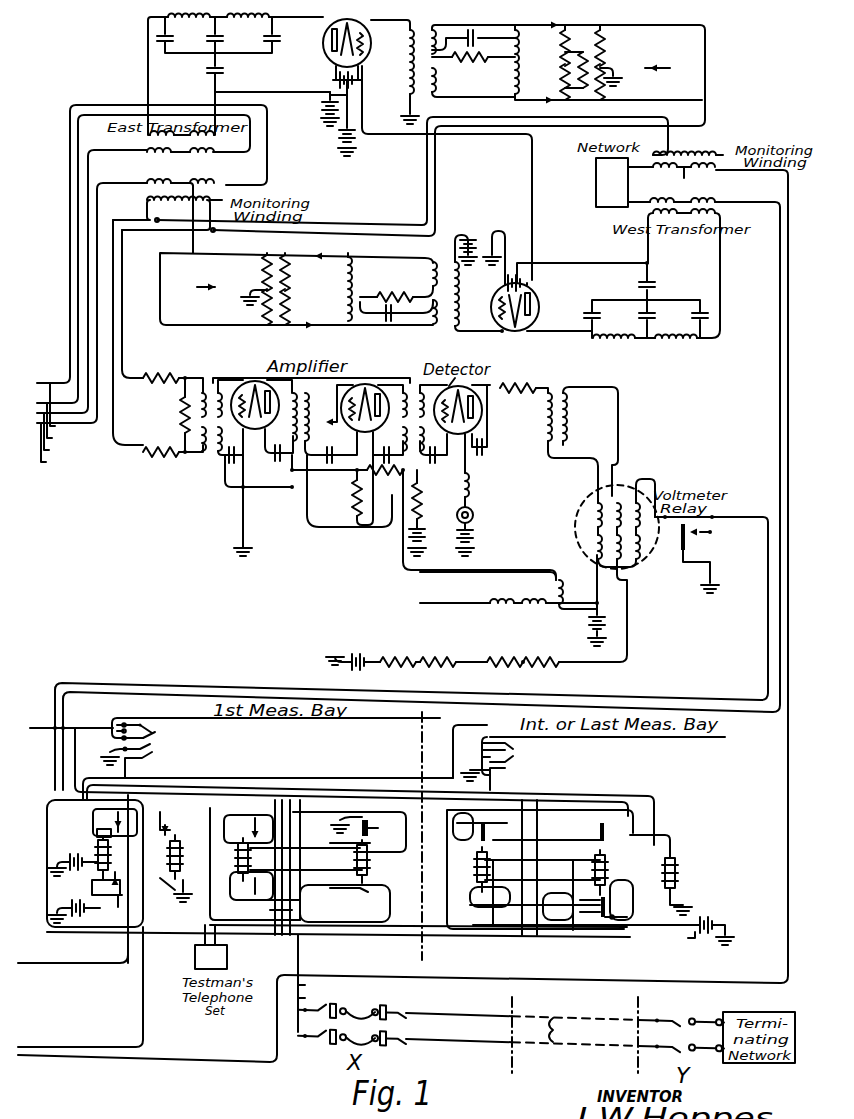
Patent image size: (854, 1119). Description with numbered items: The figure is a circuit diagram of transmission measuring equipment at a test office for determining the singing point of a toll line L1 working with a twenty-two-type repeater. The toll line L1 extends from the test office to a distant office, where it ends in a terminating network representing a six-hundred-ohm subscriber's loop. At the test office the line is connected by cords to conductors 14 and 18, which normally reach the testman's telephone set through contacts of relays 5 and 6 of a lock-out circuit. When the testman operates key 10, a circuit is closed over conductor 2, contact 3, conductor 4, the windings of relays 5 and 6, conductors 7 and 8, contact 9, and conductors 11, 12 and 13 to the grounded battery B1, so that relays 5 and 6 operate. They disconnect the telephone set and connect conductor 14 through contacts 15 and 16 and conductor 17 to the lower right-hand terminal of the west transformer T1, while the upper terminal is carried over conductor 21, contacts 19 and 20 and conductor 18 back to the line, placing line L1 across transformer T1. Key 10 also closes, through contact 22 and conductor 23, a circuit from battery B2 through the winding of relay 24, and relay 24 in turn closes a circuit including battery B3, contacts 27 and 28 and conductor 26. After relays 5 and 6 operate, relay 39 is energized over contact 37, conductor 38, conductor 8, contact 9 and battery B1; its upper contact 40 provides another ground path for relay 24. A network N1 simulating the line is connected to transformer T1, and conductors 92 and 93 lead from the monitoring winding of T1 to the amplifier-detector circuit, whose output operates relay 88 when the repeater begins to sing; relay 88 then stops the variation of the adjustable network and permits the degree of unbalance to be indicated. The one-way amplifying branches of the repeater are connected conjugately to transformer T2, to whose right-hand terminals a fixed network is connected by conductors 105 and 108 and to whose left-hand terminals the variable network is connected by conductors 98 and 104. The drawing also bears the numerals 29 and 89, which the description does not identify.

The conductor 2 is at (329, 763).
The contact of key 3 is at (149, 738).
The conductor 4 is at (113, 723).
The relay 5 is at (249, 860).
The relay 6 is at (370, 863).
The conductor 7 is at (292, 910).
The conductor 8 is at (312, 940).
The contact of relay 6' 9 is at (626, 916).
The key 10 is at (150, 754).
The conductor 11 is at (590, 912).
The conductor 12 is at (595, 903).
The conductor 13 is at (682, 937).
The conductor 14 is at (345, 903).
The contact of relay 6 15 is at (360, 888).
The contact of relay 5 16 is at (242, 880).
The conductor 17 is at (775, 360).
The conductor 18 is at (349, 922).
The contact of relay 6 19 is at (365, 847).
The contact of relay 5 20 is at (240, 836).
The conductor 21 is at (790, 360).
The contact of key 22 is at (149, 762).
The conductor 23 is at (88, 822).
The relay 24 is at (97, 855).
The conductor 26 is at (29, 964).
The contact 27 is at (115, 823).
The contact 28 is at (118, 887).
The conductor 29 is at (85, 884).
The contact of relay 6 37 is at (384, 835).
The conductor 38 is at (195, 812).
The relay 39 is at (182, 858).
The upper contact of relay 39 40 is at (173, 859).
The relay 88 is at (647, 557).
The voltmeter relay output conductor 89 is at (734, 522).
The conductor 92 is at (113, 295).
The conductor 93 is at (122, 315).
The conductor 98 is at (131, 152).
The conductor 104 is at (86, 320).
The conductor 105 is at (143, 281).
The conductor 108 is at (224, 153).
The grounded battery B1 is at (680, 890).
The battery B2 is at (73, 870).
The battery B3 is at (77, 915).
The toll line L1 is at (511, 1029).
The network N1 is at (607, 154).
The west transformer T1 is at (675, 244).
The transformer T2 is at (167, 169).